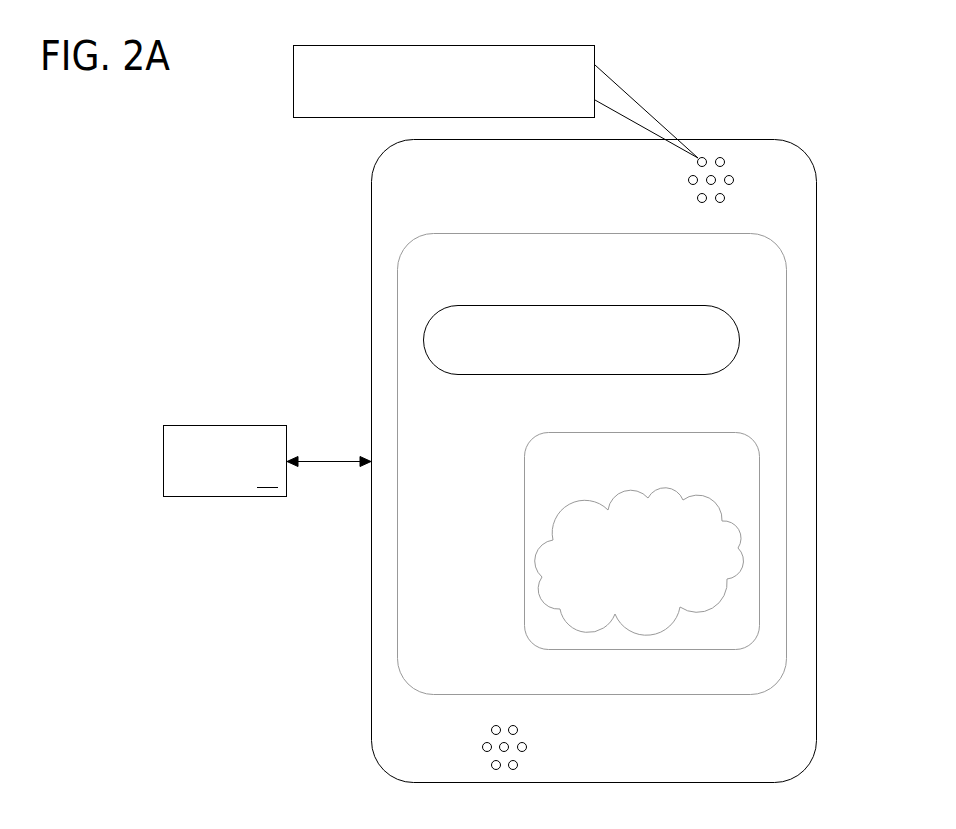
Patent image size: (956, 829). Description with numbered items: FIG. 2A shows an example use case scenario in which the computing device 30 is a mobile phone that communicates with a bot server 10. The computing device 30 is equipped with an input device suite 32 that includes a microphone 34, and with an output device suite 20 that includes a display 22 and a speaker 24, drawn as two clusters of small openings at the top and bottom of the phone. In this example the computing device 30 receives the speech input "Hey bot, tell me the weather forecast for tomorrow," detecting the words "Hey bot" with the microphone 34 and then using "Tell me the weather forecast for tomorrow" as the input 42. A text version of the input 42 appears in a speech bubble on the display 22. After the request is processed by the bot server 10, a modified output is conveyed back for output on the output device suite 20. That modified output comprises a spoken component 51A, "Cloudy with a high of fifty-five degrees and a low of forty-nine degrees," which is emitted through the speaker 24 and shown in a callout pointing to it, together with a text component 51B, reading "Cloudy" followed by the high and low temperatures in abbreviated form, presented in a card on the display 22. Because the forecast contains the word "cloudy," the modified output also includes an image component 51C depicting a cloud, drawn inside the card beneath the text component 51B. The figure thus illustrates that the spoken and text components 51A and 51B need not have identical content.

The bot server 10 is at (268, 461).
The output device suite 20 is at (713, 192).
The display 22 is at (639, 270).
The speaker 24 is at (688, 178).
The computing device 30 is at (371, 222).
The input device suite 32 is at (490, 736).
The microphone 34 is at (527, 747).
The input 42 is at (502, 305).
The spoken component 51A is at (372, 45).
The text component 51B is at (629, 524).
The image component 51C is at (660, 574).